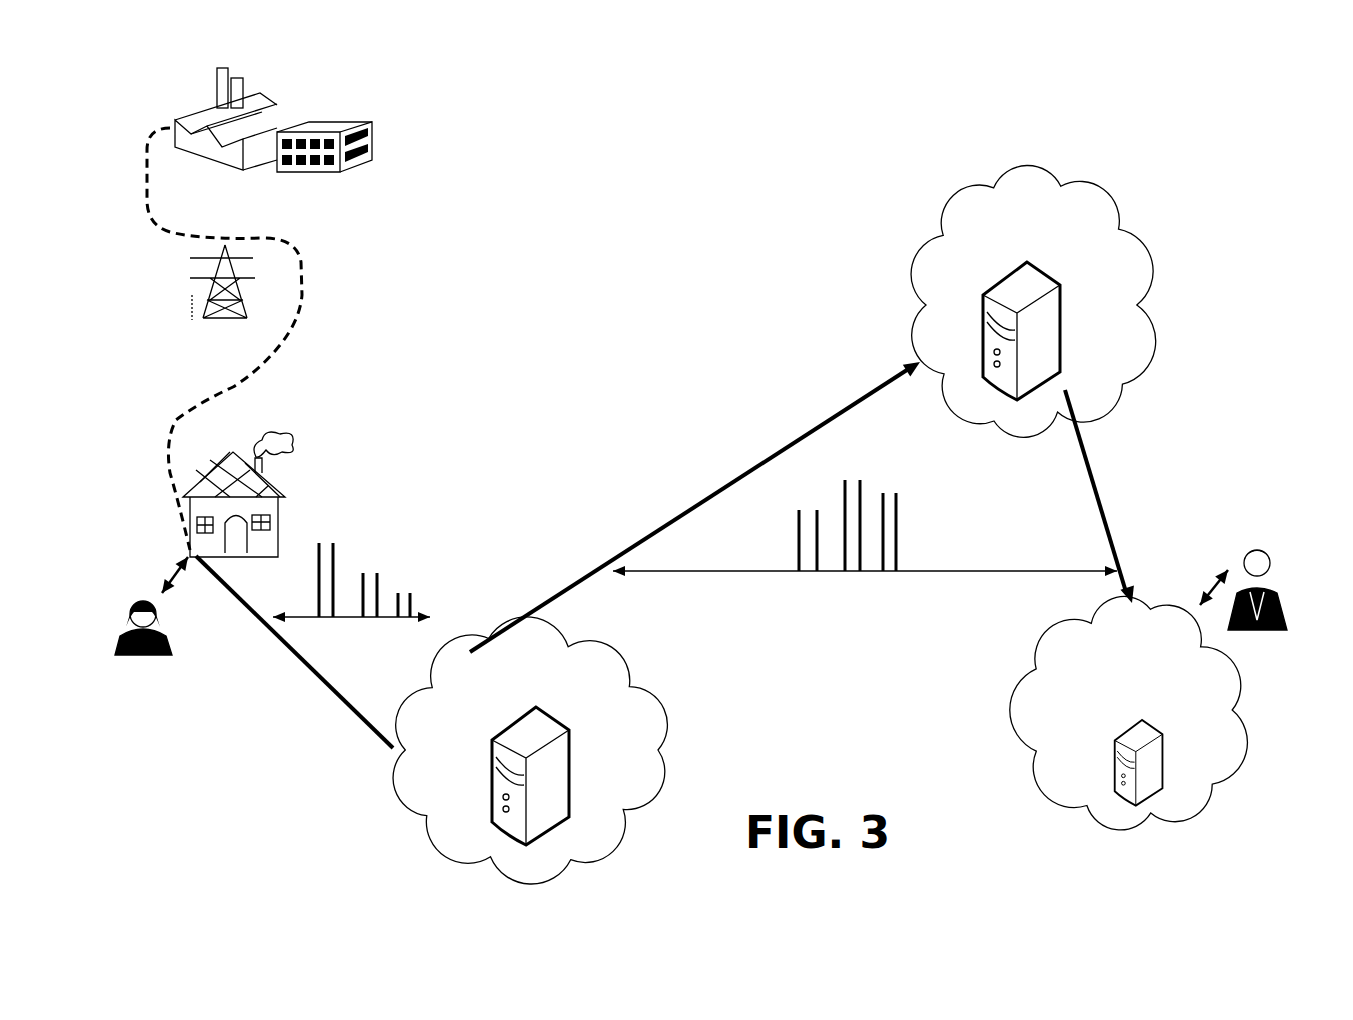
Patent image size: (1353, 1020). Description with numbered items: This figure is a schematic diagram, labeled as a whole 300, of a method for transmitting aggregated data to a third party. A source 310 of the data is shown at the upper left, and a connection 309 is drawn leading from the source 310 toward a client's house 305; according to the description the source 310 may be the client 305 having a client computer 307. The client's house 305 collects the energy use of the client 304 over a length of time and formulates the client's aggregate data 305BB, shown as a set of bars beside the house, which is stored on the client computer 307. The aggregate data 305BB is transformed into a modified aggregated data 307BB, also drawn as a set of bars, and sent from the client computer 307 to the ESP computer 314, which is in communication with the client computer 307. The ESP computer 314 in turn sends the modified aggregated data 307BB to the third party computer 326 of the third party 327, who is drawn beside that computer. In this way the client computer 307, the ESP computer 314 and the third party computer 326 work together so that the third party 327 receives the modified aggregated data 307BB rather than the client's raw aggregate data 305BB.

The system 300 is at (1155, 146).
The source 310 is at (373, 147).
The power distribution network 309 is at (300, 250).
The client's house 305 is at (277, 487).
The client 304 is at (175, 655).
The aggregate data 305BB is at (425, 607).
The client computer 307 is at (625, 812).
The ESP computer 314 is at (1137, 238).
The modified aggregated data 307BB is at (790, 570).
The third-party computer 326 is at (1038, 722).
The third party 327 is at (1247, 633).